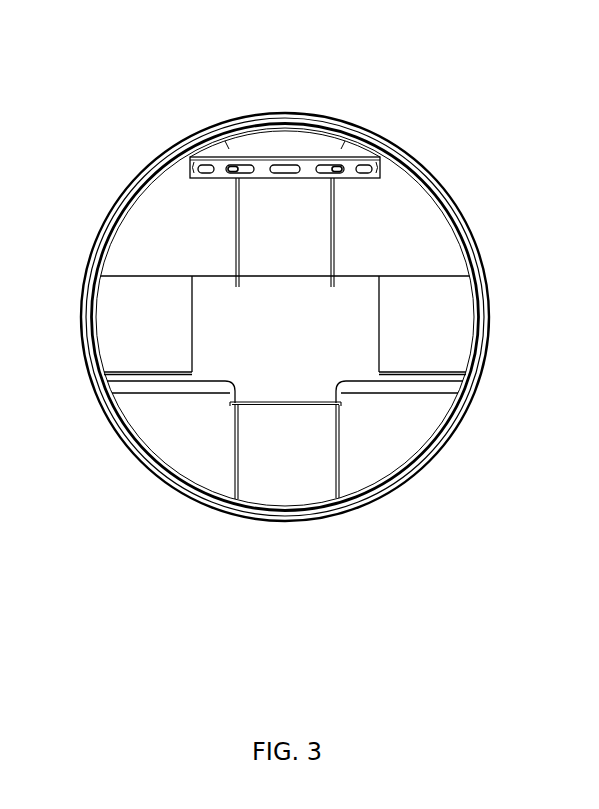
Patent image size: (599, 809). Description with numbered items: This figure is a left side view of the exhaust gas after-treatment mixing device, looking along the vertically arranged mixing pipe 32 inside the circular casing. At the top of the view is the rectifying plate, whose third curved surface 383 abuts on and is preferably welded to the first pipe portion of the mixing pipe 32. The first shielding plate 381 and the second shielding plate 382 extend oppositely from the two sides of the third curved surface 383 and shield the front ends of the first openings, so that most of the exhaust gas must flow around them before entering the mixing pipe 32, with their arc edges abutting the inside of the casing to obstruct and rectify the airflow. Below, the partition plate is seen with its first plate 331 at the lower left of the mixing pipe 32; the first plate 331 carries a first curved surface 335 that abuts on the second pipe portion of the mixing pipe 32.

The mixing pipe 32 is at (228, 354).
The first plate 331 is at (362, 442).
The first curved surface 335 is at (270, 485).
The first shielding plate 381 is at (143, 227).
The second shielding plate 382 is at (387, 232).
The third curved surface 383 is at (270, 207).